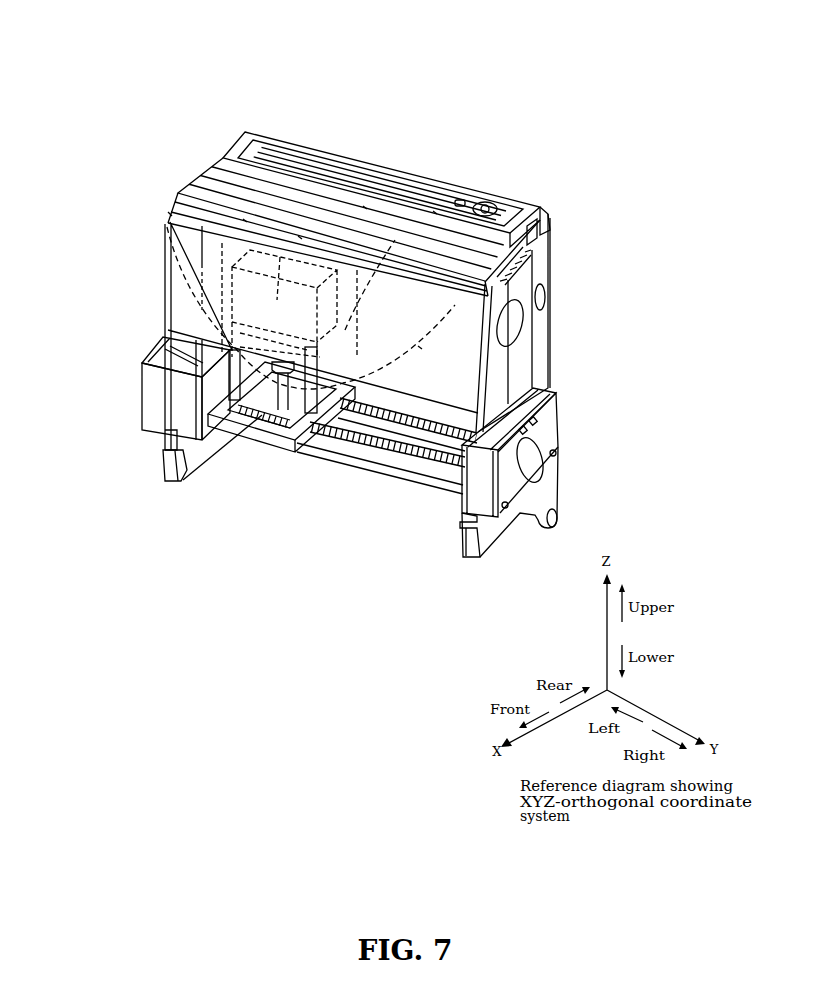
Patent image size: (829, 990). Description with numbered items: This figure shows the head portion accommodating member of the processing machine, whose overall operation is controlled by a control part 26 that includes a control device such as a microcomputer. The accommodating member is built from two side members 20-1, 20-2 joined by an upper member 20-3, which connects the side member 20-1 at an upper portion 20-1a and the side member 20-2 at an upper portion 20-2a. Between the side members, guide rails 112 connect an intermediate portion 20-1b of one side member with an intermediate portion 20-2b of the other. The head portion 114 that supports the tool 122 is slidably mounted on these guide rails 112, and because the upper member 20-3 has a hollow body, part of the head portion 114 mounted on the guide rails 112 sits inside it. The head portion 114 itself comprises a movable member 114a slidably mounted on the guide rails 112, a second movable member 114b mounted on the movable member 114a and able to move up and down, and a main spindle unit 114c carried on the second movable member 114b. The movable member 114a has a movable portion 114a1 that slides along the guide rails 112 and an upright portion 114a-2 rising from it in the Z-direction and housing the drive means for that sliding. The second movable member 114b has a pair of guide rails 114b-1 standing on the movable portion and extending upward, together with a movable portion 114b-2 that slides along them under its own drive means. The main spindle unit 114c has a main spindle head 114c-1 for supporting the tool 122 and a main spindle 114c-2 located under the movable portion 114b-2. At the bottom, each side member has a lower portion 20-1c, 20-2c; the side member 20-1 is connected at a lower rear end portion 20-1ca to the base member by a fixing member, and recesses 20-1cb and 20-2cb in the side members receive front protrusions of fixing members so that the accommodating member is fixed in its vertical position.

The head portion 114 is at (590, 42).
The movable member 114a is at (482, 78).
The second movable member 114b is at (470, 78).
The main spindle unit 114c is at (80, 78).
The movable portion 114a1 is at (420, 345).
The upright portion 114a-2 is at (435, 210).
The guide rails 114b-1 is at (365, 205).
The movable portion 114b-2 is at (300, 235).
The main spindle head 114c-1 is at (168, 223).
The main spindle 114c-2 is at (204, 222).
The control part 26 is at (551, 212).
The side member 20-1 is at (572, 402).
The upper portion 20-1a is at (520, 355).
The intermediate portion 20-1b is at (560, 440).
The lower portion 20-1c is at (545, 490).
The lower rear end portion 20-1ca is at (560, 510).
The recess 20-1cb is at (460, 525).
The side member 20-2 is at (126, 375).
The upper portion 20-2a is at (162, 308).
The intermediate portion 20-2b is at (142, 406).
The lower portion 20-2c is at (163, 462).
The recess 20-2cb is at (192, 484).
The upper member 20-3 is at (175, 283).
The guide rails 112 is at (397, 460).
The tool 122 is at (291, 452).